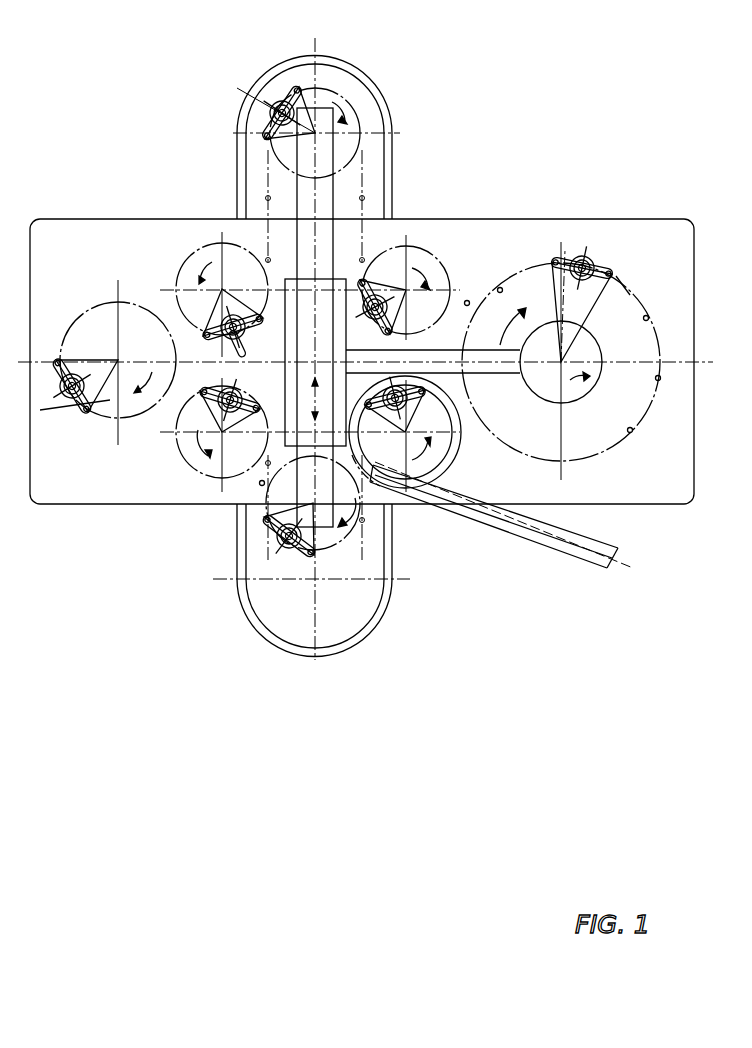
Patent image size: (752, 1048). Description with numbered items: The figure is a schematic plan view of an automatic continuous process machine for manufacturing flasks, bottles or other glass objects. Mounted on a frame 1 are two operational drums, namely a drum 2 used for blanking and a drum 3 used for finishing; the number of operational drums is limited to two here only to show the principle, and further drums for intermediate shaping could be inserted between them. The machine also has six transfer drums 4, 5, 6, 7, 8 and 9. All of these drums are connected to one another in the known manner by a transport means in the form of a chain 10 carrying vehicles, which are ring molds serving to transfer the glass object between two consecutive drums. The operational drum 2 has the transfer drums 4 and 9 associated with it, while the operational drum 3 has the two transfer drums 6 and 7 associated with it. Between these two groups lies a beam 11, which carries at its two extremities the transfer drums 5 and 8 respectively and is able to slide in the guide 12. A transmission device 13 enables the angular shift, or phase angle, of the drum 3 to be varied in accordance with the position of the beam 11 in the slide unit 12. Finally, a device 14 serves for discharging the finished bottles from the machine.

The frame 1 is at (61, 486).
The operational drum 2 is at (107, 300).
The operational drum 3 is at (623, 305).
The transfer drum 4 is at (212, 257).
The transfer drum 5 is at (323, 97).
The transfer drum 6 is at (437, 272).
The transfer drum 7 is at (432, 460).
The transfer drum 8 is at (332, 537).
The transfer drum 9 is at (200, 463).
The chain 10 is at (467, 303).
The beam 11 is at (323, 158).
The guide 12 is at (343, 282).
The transmission device 13 is at (498, 368).
The discharging device 14 is at (608, 572).